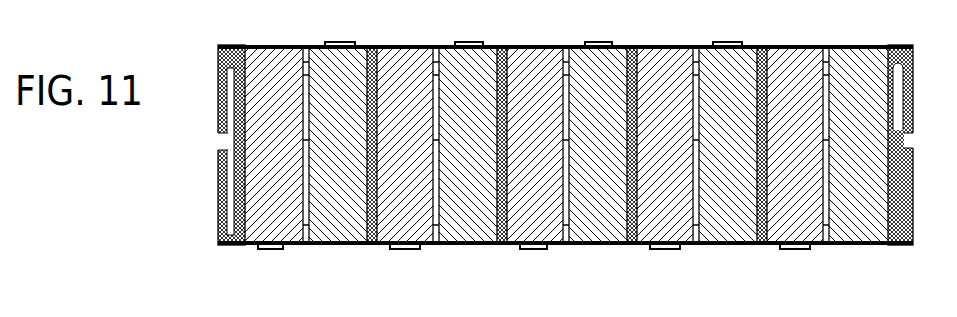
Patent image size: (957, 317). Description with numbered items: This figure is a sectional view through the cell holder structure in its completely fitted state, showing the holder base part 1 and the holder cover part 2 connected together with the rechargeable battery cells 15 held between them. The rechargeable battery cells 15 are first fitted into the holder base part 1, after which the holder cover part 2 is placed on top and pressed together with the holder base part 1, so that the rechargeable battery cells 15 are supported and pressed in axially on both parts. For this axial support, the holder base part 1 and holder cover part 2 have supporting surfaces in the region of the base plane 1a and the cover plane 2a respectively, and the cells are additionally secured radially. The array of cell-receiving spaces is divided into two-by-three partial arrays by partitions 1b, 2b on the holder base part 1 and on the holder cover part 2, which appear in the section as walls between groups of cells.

The holder base part 1 is at (233, 212).
The base plane 1a is at (488, 245).
The partition 1b is at (507, 188).
The holder cover part 2 is at (233, 63).
The cover plane 2a is at (525, 47).
The partition 2b is at (496, 98).
The rechargeable battery cells 15 is at (287, 220).